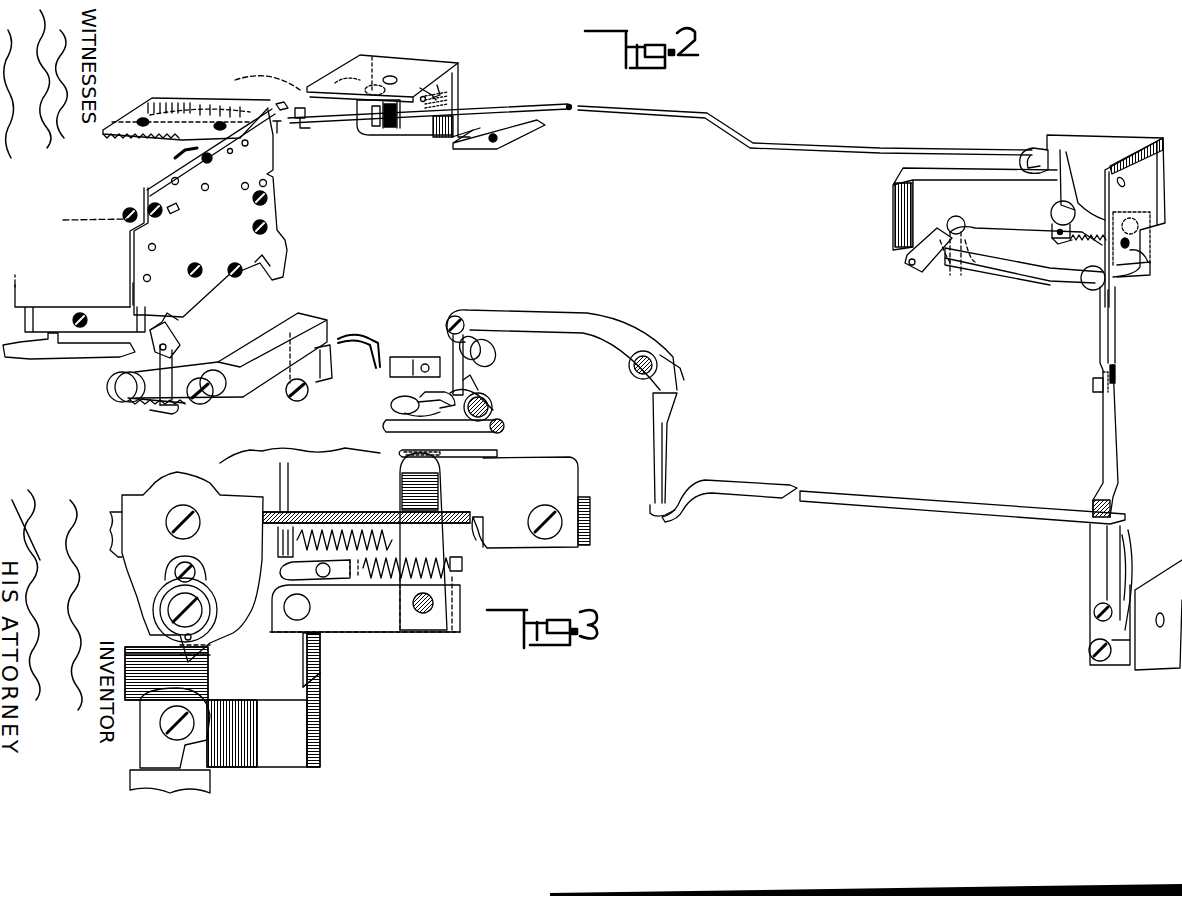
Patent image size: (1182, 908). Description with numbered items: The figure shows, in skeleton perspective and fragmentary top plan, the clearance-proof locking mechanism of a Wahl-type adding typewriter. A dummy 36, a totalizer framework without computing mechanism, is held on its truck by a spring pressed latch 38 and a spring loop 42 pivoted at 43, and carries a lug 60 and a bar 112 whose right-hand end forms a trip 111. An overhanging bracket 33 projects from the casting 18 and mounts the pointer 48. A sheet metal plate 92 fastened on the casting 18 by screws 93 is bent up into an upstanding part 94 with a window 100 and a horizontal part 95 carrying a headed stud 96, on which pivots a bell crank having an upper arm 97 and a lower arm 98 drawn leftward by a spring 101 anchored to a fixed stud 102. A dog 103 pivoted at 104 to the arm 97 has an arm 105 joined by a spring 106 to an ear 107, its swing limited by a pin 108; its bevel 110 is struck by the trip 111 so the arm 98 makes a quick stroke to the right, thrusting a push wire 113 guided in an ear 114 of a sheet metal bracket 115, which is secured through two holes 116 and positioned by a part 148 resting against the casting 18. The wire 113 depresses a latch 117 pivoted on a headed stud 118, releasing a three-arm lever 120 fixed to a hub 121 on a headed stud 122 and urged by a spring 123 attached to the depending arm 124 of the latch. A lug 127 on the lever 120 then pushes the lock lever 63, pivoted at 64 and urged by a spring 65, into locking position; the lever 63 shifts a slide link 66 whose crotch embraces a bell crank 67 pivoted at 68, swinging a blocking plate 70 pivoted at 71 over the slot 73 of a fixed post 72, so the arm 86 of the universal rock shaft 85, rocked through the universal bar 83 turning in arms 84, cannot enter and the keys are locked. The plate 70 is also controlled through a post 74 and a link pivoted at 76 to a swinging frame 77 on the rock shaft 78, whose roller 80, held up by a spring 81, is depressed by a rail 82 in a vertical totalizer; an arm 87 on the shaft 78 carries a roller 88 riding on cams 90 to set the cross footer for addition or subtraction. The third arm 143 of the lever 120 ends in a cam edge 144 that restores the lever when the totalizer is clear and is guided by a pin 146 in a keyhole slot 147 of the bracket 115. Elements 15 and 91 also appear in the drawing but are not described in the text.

In FIG. 2, the arm 15 is at (386, 350).
In FIG. 3, the casting 18 is at (112, 512).
In FIG. 3, the overhanging bracket 33 is at (130, 592).
In FIG. 2, the dummy 36 is at (272, 203).
In FIG. 3, the dummy 36 is at (208, 677).
In FIG. 2, the spring pressed latch 38 is at (185, 149).
In FIG. 3, the spring loop 42 is at (170, 740).
In FIG. 2, the pivot screw 43 is at (230, 151).
In FIG. 3, the pivot screw 43 is at (165, 734).
In FIG. 3, the pointer 48 is at (208, 645).
In FIG. 2, the lug 60 is at (270, 265).
In FIG. 2, the lever 63 is at (1102, 441).
In FIG. 2, the pivot 64 is at (1089, 653).
In FIG. 2, the spring 65 is at (1130, 546).
In FIG. 2, the slide link 66 is at (963, 511).
In FIG. 2, the bell crank 67 is at (665, 450).
In FIG. 2, the pivot 68 is at (636, 372).
In FIG. 2, the blocking plate 70 is at (452, 340).
In FIG. 2, the pivot 71 is at (449, 318).
In FIG. 2, the fixed post 72 is at (492, 362).
In FIG. 2, the longitudinal slot 73 is at (473, 384).
In FIG. 2, the post 74 is at (412, 357).
In FIG. 2, the pivot 76 is at (297, 397).
In FIG. 2, the swinging frame 77 is at (264, 378).
In FIG. 2, the rock shaft 78 is at (231, 355).
In FIG. 2, the roller 80 is at (182, 340).
In FIG. 2, the spring 81 is at (150, 404).
In FIG. 2, the track or rail 82 is at (180, 324).
In FIG. 2, the universal bar 83 is at (500, 425).
In FIG. 2, the arms 84 is at (420, 398).
In FIG. 2, the universal rock shaft 85 is at (400, 407).
In FIG. 2, the arm 86 is at (452, 390).
In FIG. 2, the arm 87 is at (133, 403).
In FIG. 2, the roller 88 is at (107, 386).
In FIG. 2, the cams 90 is at (75, 360).
In FIG. 2, the screw 91 is at (73, 321).
In FIG. 2, the sheet metal plate 92 is at (288, 96).
In FIG. 3, the sheet metal plate 92 is at (262, 452).
In FIG. 2, the screws 93 is at (493, 142).
In FIG. 3, the screws 93 is at (533, 510).
In FIG. 2, the upstanding part 94 is at (459, 78).
In FIG. 3, the upstanding part 94 is at (362, 512).
In FIG. 2, the forwardly extending horizontal part 95 is at (352, 68).
In FIG. 2, the headed stud 96 is at (403, 117).
In FIG. 3, the headed stud 96 is at (424, 612).
In FIG. 2, the upper leftward extending arm 97 is at (422, 88).
In FIG. 3, the upper leftward extending arm 97 is at (383, 628).
In FIG. 2, the lower rearward extending arm 98 is at (435, 94).
In FIG. 3, the lower rearward extending arm 98 is at (436, 493).
In FIG. 2, the opening or window 100 is at (440, 137).
In FIG. 3, the opening or window 100 is at (462, 505).
In FIG. 3, the spring 101 is at (340, 512).
In FIG. 3, the fixed stud 102 is at (305, 512).
In FIG. 2, the dog 103 is at (305, 115).
In FIG. 3, the dog 103 is at (322, 660).
In FIG. 2, the pivot 104 is at (335, 82).
In FIG. 3, the pivot 104 is at (366, 608).
In FIG. 2, the arm 105 is at (381, 76).
In FIG. 3, the arm 105 is at (355, 582).
In FIG. 3, the spring 106 is at (383, 580).
In FIG. 2, the ear 107 is at (438, 85).
In FIG. 3, the ear 107 is at (463, 563).
In FIG. 2, the pin 108 is at (372, 56).
In FIG. 3, the pin 108 is at (316, 568).
In FIG. 2, the bevel 110 is at (306, 122).
In FIG. 3, the bevel 110 is at (322, 675).
In FIG. 2, the trip 111 is at (279, 128).
In FIG. 3, the trip 111 is at (321, 698).
In FIG. 2, the bar 112 is at (281, 104).
In FIG. 3, the bar 112 is at (273, 700).
In FIG. 2, the push wire 113 is at (575, 104).
In FIG. 3, the push wire 113 is at (498, 453).
In FIG. 2, the ear 114 is at (1038, 145).
In FIG. 2, the sheet metal bracket 115 is at (1127, 133).
In FIG. 2, the holes 116 is at (1124, 178).
In FIG. 2, the latch 117 is at (1082, 195).
In FIG. 2, the headed stud 118 is at (1053, 218).
In FIG. 2, the three-arm lever 120 is at (1024, 270).
In FIG. 2, the hub 121 is at (1125, 278).
In FIG. 2, the headed stud 122 is at (1091, 290).
In FIG. 2, the spring 123 is at (1083, 242).
In FIG. 2, the depending arm 124 is at (1057, 243).
In FIG. 2, the lug 127 is at (1093, 386).
In FIG. 2, the third arm 143 is at (1006, 288).
In FIG. 2, the cam edge 144 is at (920, 280).
In FIG. 2, the post or stud 146 is at (940, 240).
In FIG. 2, the keyhole slot 147 is at (962, 258).
In FIG. 2, the part 148 is at (900, 180).